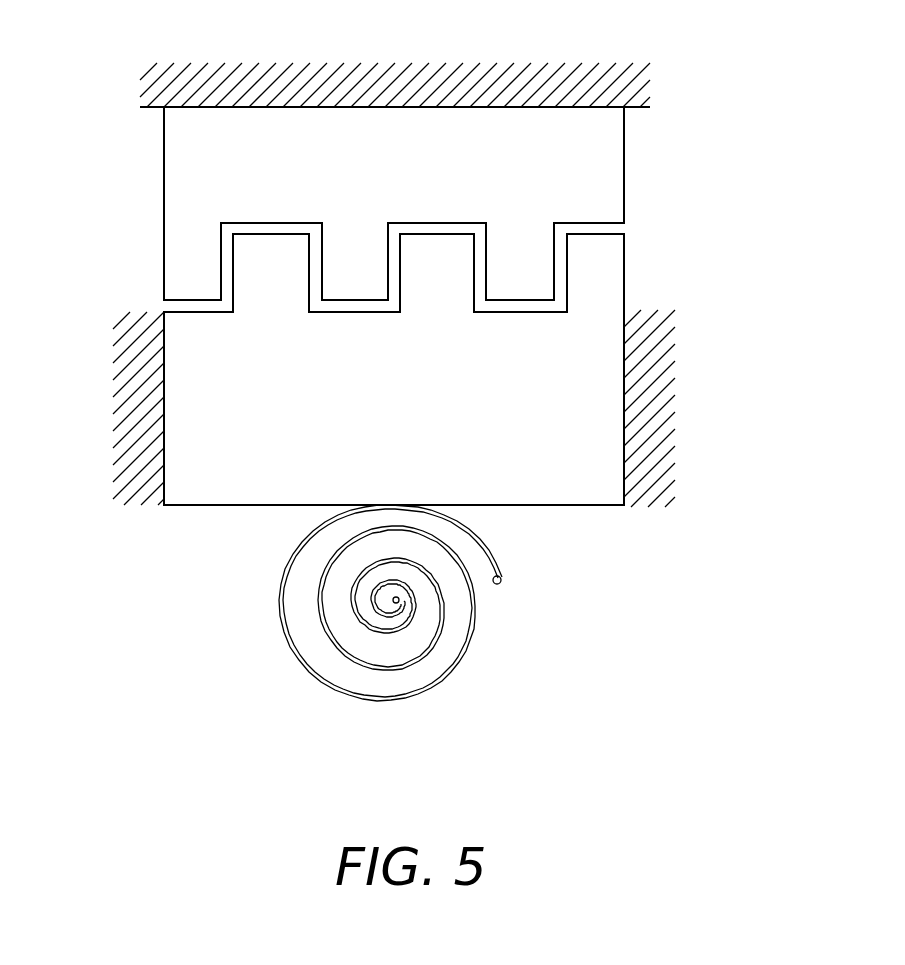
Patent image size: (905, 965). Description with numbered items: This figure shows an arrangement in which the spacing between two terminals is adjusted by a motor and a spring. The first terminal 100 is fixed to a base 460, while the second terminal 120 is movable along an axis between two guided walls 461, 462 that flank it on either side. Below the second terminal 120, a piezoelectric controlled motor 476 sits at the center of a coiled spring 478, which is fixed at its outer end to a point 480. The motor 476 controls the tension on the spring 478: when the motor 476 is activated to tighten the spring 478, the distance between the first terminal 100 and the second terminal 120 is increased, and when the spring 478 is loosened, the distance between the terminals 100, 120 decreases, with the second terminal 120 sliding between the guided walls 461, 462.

The base 460 is at (155, 67).
The first terminal 100 is at (625, 148).
The second terminal 120 is at (545, 506).
The guided wall 461 is at (138, 318).
The guided wall 462 is at (642, 310).
The piezoelectric controlled motor 476 is at (375, 617).
The spring 478 is at (437, 686).
The point 480 is at (500, 583).